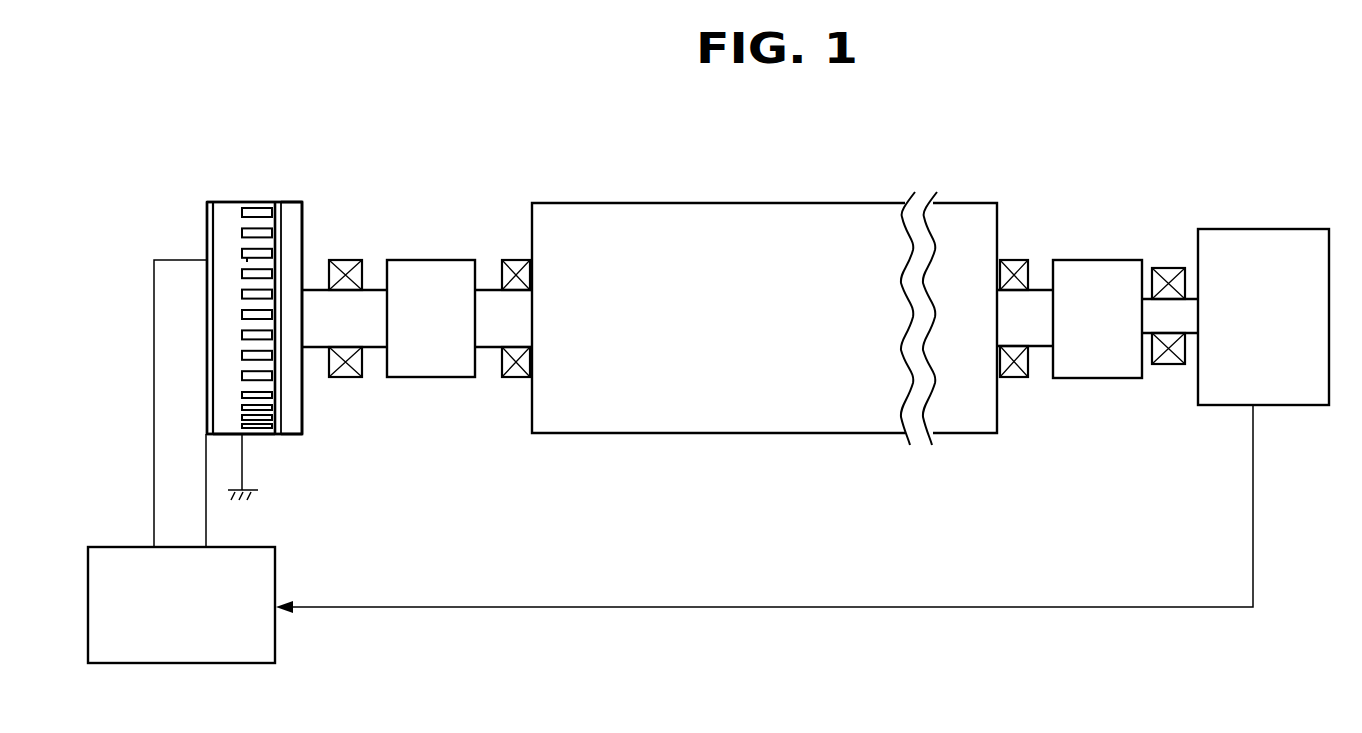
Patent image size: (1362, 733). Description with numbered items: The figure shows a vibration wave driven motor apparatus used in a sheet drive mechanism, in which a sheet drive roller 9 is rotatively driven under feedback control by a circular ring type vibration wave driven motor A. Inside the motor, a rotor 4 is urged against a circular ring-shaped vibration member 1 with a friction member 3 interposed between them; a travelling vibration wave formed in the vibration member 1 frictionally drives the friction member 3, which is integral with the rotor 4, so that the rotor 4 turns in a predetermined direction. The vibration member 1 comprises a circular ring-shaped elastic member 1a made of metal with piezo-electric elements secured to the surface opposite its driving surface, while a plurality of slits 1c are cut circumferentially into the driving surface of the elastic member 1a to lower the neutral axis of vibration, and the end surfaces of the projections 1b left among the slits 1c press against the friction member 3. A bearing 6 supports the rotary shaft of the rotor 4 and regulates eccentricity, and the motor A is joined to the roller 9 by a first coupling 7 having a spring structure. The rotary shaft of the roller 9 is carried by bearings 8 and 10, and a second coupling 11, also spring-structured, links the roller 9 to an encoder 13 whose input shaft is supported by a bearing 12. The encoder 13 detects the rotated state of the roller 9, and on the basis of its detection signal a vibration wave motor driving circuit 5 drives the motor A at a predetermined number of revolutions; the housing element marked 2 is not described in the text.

The vibration wave driven motor A is at (242, 182).
The vibration member 1 is at (230, 212).
The elastic member 1a is at (225, 424).
The projections 1b is at (247, 260).
The slits 1c is at (242, 248).
The housing 2 is at (207, 203).
The friction member 3 is at (277, 203).
The rotor 4 is at (318, 297).
The vibration wave motor driving circuit 5 is at (277, 572).
The bearing 6 is at (345, 258).
The first coupling 7 is at (418, 258).
The bearing 8 is at (517, 380).
The sheet drive roller 9 is at (492, 288).
The bearing 10 is at (1022, 380).
The second coupling 11 is at (1107, 260).
The bearing 12 is at (1165, 365).
The encoder 13 is at (1232, 229).